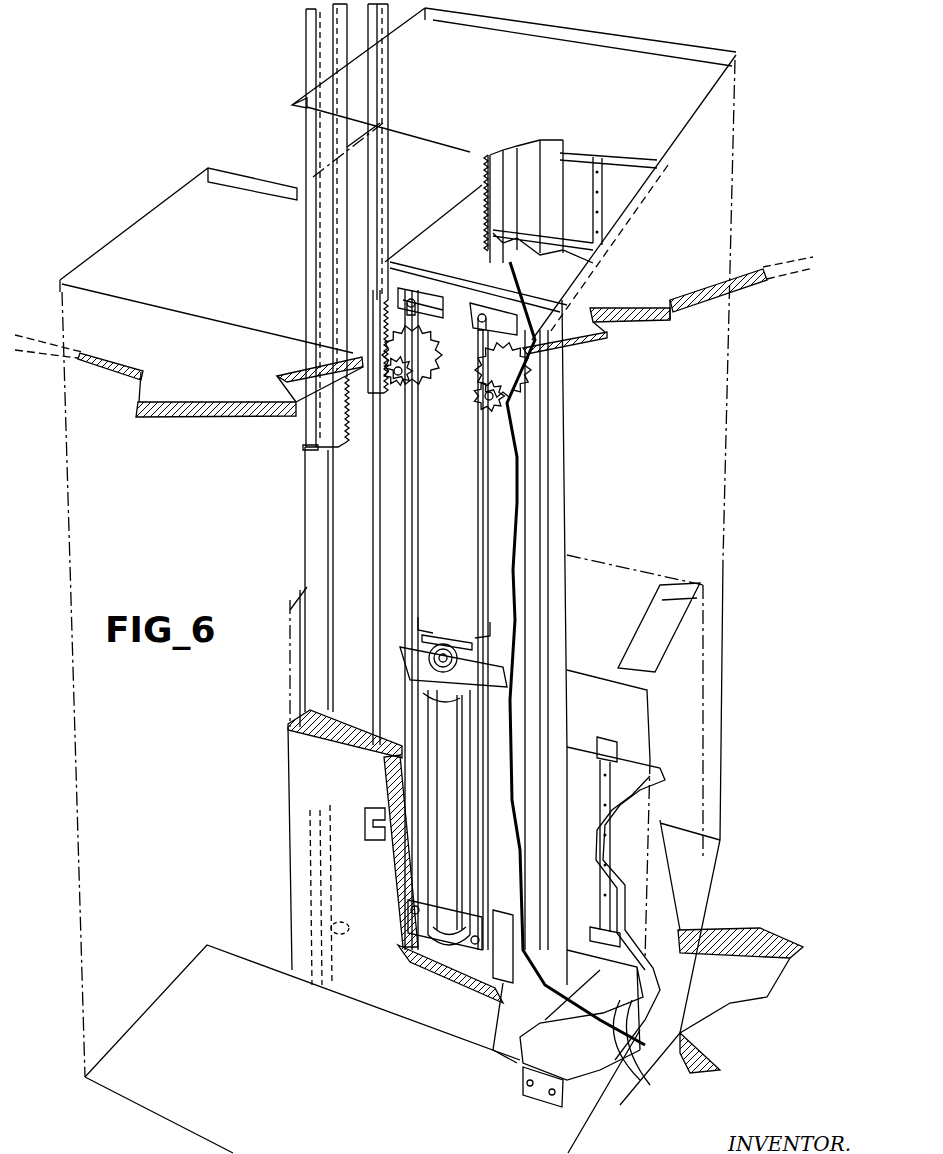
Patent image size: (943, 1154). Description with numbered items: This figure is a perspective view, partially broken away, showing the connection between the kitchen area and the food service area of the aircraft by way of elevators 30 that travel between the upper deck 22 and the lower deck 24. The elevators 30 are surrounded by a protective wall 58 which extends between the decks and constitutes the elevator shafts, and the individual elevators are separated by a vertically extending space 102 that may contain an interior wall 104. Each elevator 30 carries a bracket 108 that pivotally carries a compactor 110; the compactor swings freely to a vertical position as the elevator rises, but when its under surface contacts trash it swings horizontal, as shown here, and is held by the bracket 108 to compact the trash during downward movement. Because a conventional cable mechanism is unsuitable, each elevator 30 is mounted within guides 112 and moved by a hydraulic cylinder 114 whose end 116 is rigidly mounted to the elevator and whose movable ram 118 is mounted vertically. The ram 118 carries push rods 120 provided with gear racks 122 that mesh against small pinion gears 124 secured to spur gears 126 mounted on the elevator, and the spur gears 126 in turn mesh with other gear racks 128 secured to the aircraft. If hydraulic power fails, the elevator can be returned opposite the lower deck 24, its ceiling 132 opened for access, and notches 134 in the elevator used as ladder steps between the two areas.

The upper deck 22 is at (215, 371).
The lower deck 24 is at (783, 913).
The elevator 30 is at (568, 533).
The protective wall 58 is at (68, 613).
The vertically extending space 102 is at (331, 926).
The interior wall 104 is at (520, 500).
The bracket 108 is at (523, 1077).
The compactor 110 is at (650, 1010).
The guide 112 is at (333, 72).
The hydraulic cylinder 114 is at (457, 782).
The end of cylinder 116 is at (440, 947).
The movable ram 118 is at (443, 655).
The push rod 120 is at (490, 738).
The gear rack 122 is at (392, 466).
The pinion gear 124 is at (410, 380).
The spur gear 126 is at (425, 370).
The gear rack 128 is at (480, 227).
The ceiling 132 is at (452, 218).
The notch 134 is at (370, 882).